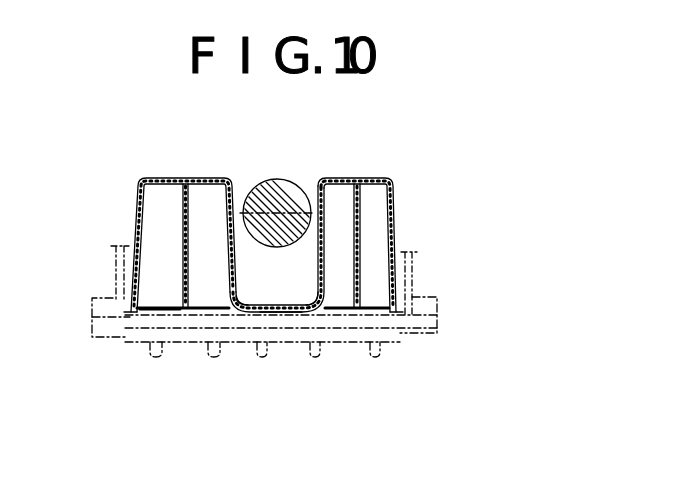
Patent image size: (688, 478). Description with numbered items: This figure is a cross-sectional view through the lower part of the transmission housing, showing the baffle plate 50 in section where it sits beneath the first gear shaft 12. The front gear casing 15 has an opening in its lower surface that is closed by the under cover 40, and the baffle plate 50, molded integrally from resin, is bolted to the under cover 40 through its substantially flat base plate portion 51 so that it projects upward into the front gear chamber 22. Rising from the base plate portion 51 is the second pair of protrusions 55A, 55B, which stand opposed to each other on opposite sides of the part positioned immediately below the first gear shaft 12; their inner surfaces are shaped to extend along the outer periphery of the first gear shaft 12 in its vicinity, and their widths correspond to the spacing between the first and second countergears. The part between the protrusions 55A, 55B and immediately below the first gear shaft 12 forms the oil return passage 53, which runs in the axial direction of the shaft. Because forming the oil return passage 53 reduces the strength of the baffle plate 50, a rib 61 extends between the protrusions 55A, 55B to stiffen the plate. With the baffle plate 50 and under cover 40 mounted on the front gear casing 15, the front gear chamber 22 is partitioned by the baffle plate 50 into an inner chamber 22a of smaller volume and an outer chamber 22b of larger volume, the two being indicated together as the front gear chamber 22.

The baffle plate 50 is at (300, 262).
The second protrusion 55B is at (157, 178).
The second protrusion 55A is at (395, 191).
The first gear shaft 12 is at (278, 179).
The front gear casing 15 is at (420, 270).
The under cover 40 is at (399, 345).
The front gear chamber 22 is at (244, 388).
The inner chamber 22a is at (232, 274).
The base recess portion 22b is at (240, 322).
The oil return passage 53 is at (246, 316).
The base plate portion 51 is at (297, 312).
The rib 61 is at (331, 310).